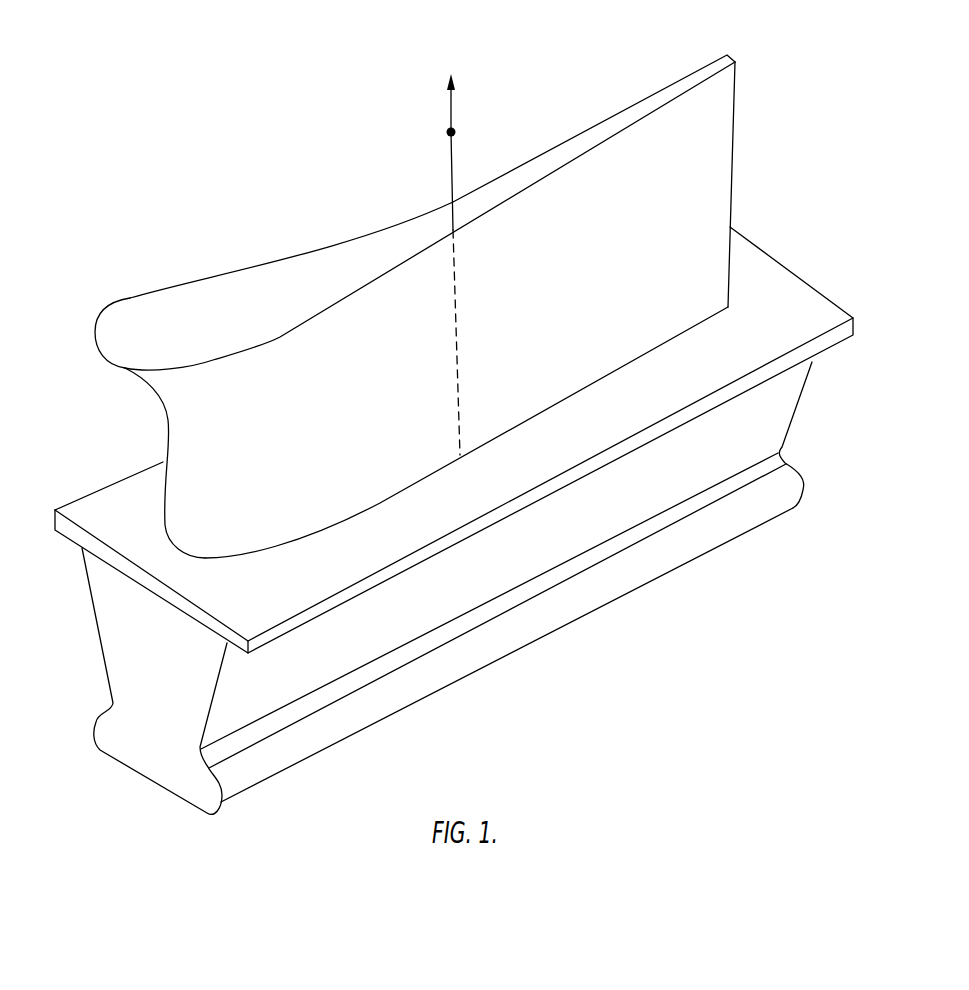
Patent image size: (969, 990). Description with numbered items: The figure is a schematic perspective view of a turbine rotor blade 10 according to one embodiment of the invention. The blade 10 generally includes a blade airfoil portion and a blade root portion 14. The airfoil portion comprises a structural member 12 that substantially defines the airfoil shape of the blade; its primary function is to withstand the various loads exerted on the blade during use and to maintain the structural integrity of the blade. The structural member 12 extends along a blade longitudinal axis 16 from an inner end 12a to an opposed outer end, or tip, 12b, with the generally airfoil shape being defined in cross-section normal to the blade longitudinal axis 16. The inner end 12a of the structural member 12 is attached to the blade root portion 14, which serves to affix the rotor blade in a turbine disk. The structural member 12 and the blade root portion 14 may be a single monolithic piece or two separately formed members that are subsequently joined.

The blade 10 is at (377, 195).
The structural member 12 is at (717, 173).
The inner end 12a is at (697, 320).
The outer end 12b is at (582, 157).
The blade root portion 14 is at (660, 492).
The blade longitudinal axis 16 is at (457, 125).